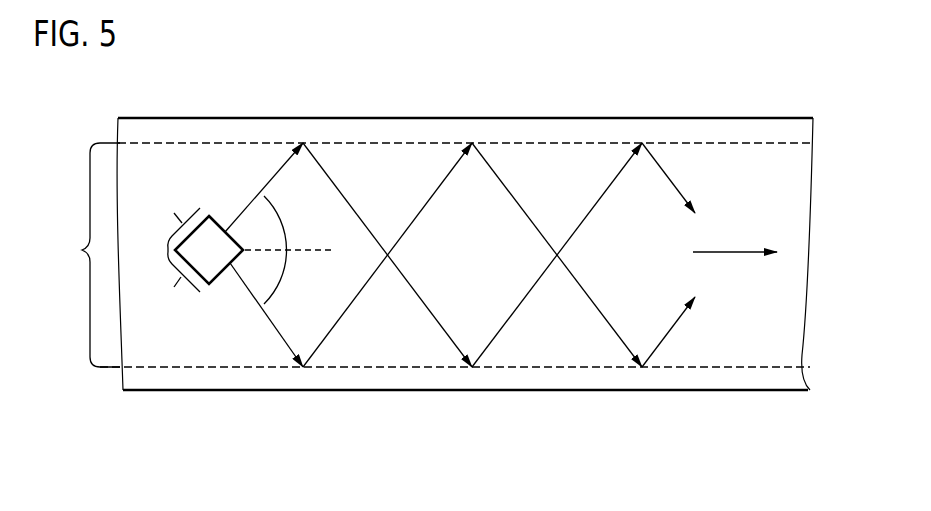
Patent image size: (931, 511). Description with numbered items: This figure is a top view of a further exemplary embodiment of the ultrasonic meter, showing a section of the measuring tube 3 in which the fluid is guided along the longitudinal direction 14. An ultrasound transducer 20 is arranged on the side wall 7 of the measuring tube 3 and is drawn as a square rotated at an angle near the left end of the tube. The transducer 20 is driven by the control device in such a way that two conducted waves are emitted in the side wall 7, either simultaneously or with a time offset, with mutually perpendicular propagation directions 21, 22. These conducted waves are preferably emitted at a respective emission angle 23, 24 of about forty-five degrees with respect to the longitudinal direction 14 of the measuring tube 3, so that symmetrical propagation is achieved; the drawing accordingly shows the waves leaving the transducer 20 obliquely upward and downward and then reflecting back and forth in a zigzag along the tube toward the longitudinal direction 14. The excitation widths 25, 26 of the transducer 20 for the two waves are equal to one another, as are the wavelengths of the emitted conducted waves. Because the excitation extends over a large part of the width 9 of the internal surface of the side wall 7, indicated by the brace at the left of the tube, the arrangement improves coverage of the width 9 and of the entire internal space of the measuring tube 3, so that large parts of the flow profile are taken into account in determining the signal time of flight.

The measuring tube 3 is at (582, 105).
The side wall 7 is at (695, 352).
The width 9 is at (82, 250).
The longitudinal direction 14 is at (727, 252).
The ultrasound transducer 20 is at (220, 215).
The propagation direction 21 is at (264, 196).
The propagation direction 22 is at (270, 325).
The emission angle 23 is at (262, 223).
The emission angle 24 is at (257, 272).
The excitation width 25 is at (174, 287).
The excitation width 26 is at (174, 213).